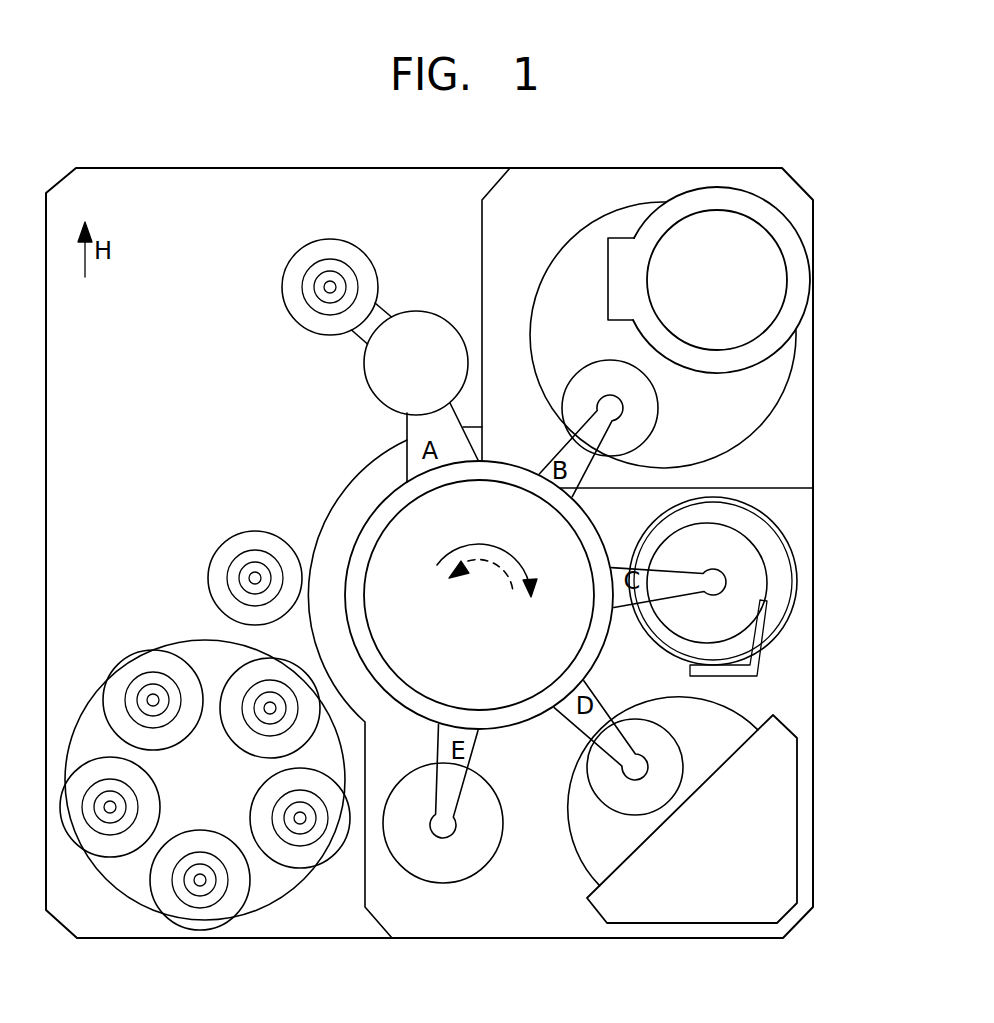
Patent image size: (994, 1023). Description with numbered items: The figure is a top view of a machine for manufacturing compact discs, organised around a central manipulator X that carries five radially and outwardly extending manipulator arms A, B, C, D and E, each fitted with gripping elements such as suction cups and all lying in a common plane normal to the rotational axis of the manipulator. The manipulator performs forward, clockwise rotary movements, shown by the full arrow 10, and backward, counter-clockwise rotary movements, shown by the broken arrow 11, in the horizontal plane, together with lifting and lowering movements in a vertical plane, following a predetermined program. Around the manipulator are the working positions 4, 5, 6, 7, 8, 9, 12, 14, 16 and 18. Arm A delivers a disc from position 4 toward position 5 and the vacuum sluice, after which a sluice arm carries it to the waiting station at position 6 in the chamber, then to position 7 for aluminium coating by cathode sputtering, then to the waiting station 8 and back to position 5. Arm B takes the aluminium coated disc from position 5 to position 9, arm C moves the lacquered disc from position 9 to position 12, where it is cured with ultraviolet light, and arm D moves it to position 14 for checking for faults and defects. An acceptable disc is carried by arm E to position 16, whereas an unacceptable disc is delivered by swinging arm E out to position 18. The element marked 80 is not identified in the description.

The position 4 is at (388, 367).
The position 5 is at (633, 399).
The waiting station position 6 is at (694, 337).
The coating position 7 is at (745, 232).
The waiting station 8 is at (718, 435).
The position 9 is at (737, 580).
The full arrow 10 is at (434, 568).
The broken arrow 11 is at (478, 560).
The position 12 is at (637, 787).
The position 14 is at (465, 833).
The position 16 is at (292, 705).
The position 18 is at (230, 580).
The ring 80 is at (718, 188).